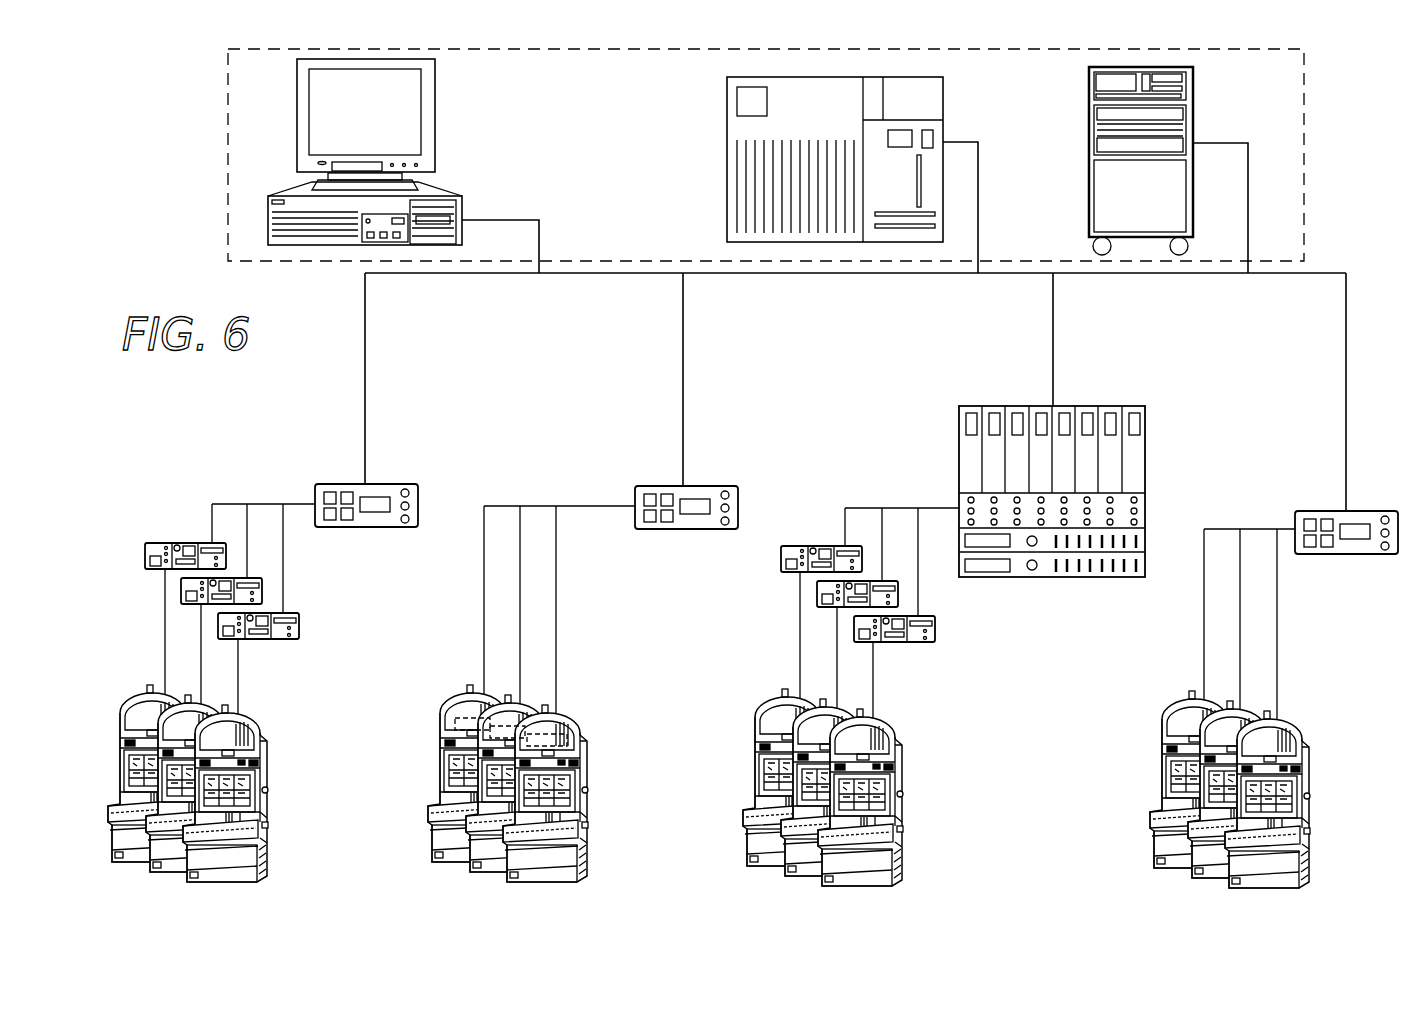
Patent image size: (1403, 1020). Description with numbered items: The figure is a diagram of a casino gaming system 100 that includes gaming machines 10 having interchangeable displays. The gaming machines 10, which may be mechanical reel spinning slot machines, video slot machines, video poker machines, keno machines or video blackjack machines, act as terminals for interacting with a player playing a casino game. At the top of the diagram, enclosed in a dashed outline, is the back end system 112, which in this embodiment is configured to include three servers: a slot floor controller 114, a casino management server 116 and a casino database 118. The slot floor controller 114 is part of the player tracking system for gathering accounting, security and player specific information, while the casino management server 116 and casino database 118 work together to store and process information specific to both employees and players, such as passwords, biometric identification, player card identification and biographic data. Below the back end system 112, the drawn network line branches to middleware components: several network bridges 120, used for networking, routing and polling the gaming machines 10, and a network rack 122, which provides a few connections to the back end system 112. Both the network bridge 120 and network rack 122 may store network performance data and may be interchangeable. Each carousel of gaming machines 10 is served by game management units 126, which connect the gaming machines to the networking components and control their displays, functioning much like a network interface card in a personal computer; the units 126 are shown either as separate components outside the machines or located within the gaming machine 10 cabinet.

The casino gaming system 100 is at (198, 223).
The back end system 112 is at (227, 118).
The slot floor controller 114 is at (435, 99).
The casino management server 116 is at (727, 155).
The casino database 118 is at (1088, 143).
The network bridge 120 is at (343, 484).
The network rack 122 is at (958, 455).
The game management unit 126 is at (145, 556).
The gaming machine 10 is at (133, 711).